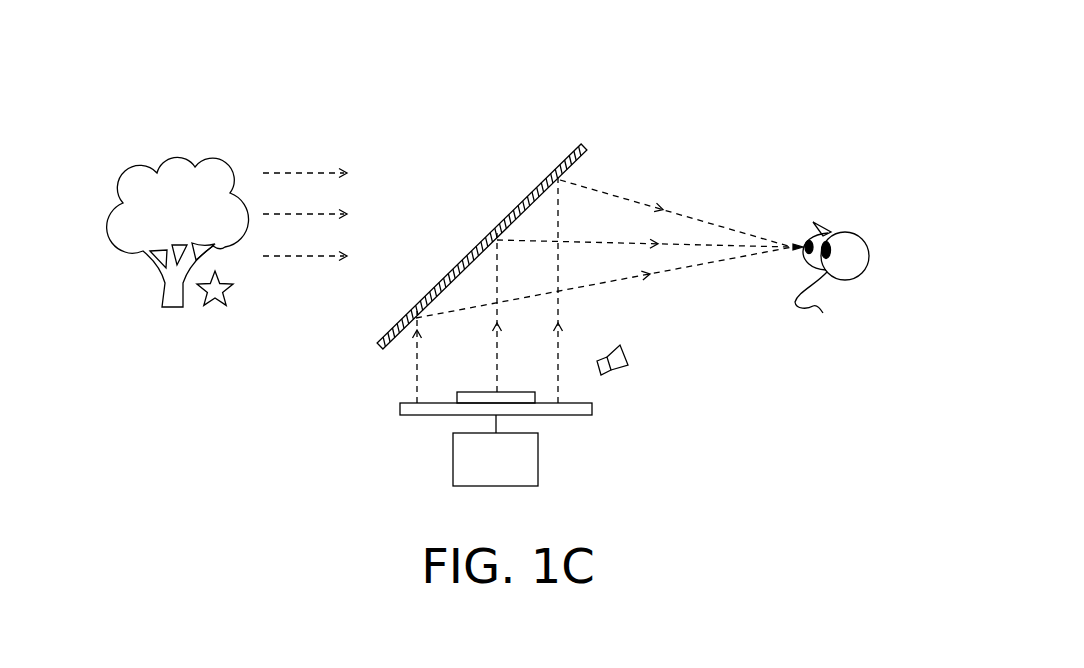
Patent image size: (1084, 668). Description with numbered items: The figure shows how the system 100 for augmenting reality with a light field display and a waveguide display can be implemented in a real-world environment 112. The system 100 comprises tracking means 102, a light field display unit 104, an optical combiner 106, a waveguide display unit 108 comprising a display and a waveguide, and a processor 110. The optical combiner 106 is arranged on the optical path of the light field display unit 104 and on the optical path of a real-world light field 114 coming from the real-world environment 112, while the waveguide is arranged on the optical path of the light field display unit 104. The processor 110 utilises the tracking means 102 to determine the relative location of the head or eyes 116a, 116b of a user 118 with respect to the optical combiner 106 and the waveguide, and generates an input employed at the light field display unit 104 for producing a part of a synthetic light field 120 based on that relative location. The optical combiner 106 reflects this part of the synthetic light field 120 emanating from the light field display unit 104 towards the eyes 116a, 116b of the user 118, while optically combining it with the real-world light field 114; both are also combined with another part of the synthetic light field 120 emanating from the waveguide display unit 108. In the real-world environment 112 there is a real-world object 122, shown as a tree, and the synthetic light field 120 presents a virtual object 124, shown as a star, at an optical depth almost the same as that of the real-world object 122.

The system 100 is at (384, 117).
The tracking means 102 is at (661, 365).
The light field display unit 104 is at (550, 418).
The optical combiner 106 is at (431, 263).
The waveguide display unit 108 is at (388, 409).
The processor 110 is at (476, 474).
The real-world environment 112 is at (160, 218).
The real-world light field 114 is at (281, 247).
The eye 116a is at (819, 213).
The eye 116b is at (861, 295).
The user 118 is at (858, 252).
The synthetic light field 120 is at (609, 223).
The real-world object 122 is at (160, 237).
The virtual object 124 is at (212, 331).